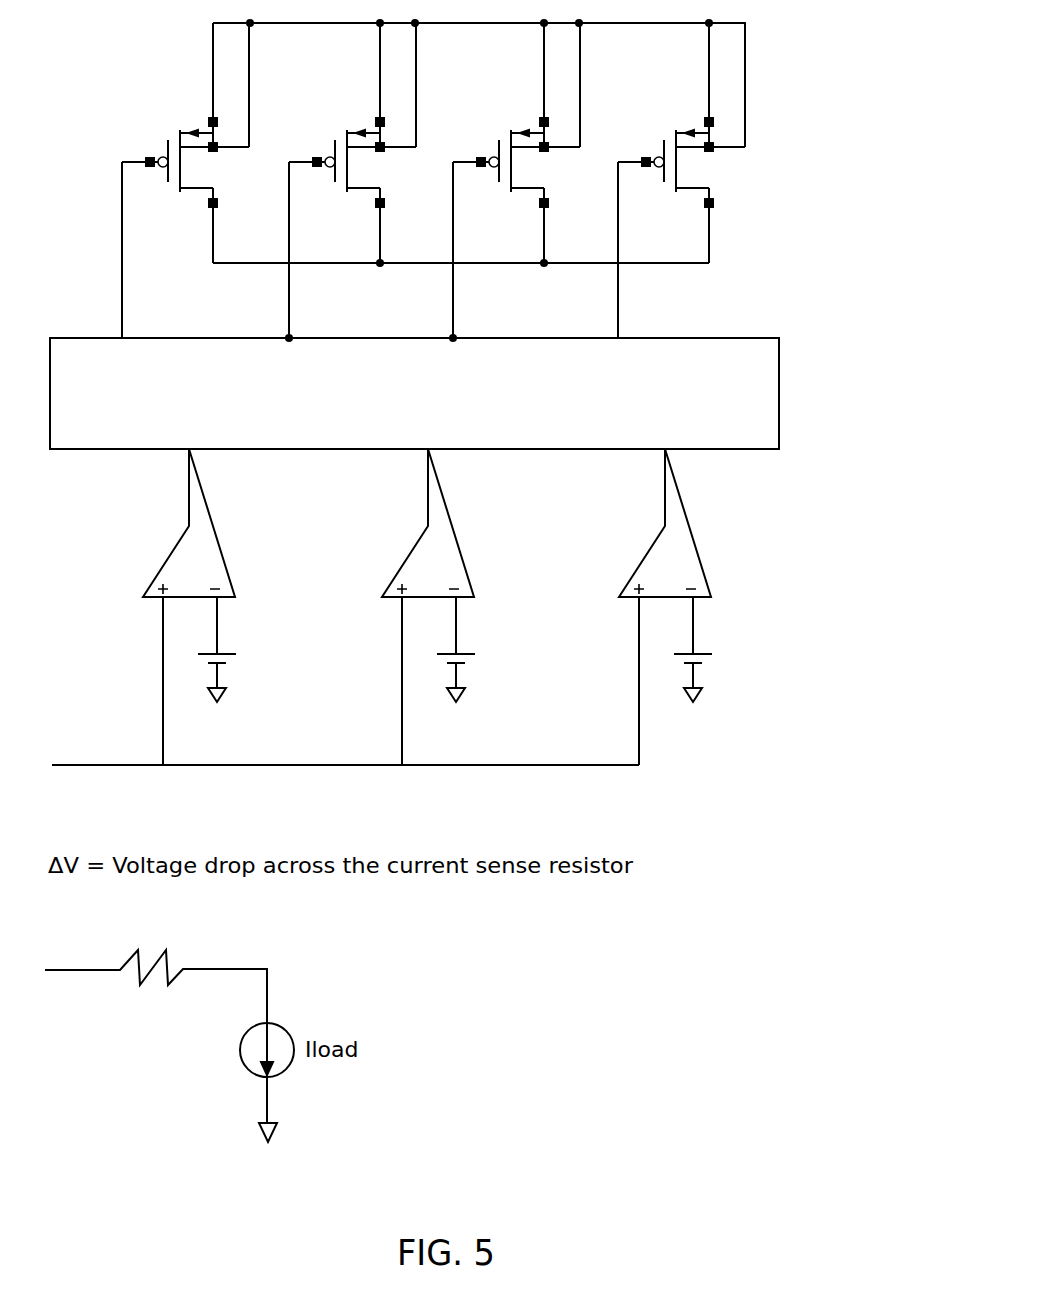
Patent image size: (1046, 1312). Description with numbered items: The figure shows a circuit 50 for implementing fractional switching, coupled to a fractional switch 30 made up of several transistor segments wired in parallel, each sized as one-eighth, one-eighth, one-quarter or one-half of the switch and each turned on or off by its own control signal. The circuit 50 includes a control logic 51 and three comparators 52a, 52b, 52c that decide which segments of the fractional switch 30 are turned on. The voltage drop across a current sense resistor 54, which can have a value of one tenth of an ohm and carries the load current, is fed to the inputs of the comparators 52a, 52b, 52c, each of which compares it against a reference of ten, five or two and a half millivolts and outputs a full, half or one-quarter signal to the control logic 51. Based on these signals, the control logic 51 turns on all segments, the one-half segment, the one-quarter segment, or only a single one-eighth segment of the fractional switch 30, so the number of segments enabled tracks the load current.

The fractional switch 30 is at (758, 62).
The circuit 50 is at (470, 538).
The control logic 51 is at (779, 328).
The comparator 52a is at (208, 553).
The comparator 52b is at (447, 553).
The comparator 52c is at (684, 553).
The current sense resistor 54 is at (180, 957).